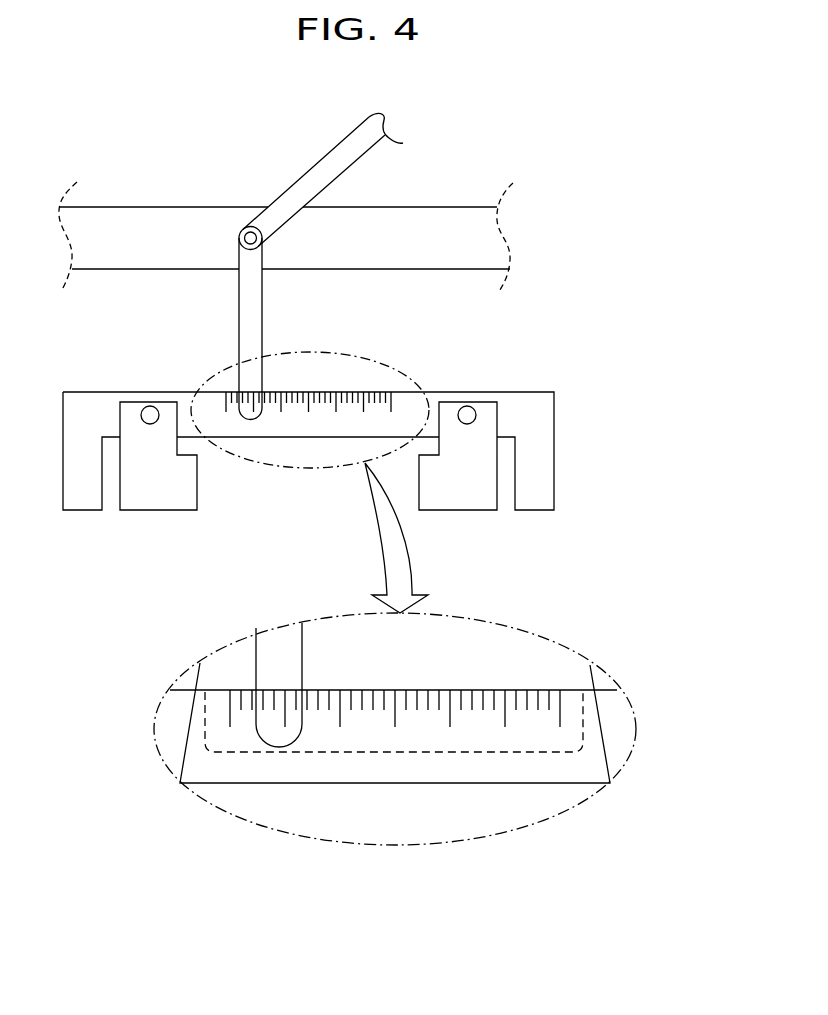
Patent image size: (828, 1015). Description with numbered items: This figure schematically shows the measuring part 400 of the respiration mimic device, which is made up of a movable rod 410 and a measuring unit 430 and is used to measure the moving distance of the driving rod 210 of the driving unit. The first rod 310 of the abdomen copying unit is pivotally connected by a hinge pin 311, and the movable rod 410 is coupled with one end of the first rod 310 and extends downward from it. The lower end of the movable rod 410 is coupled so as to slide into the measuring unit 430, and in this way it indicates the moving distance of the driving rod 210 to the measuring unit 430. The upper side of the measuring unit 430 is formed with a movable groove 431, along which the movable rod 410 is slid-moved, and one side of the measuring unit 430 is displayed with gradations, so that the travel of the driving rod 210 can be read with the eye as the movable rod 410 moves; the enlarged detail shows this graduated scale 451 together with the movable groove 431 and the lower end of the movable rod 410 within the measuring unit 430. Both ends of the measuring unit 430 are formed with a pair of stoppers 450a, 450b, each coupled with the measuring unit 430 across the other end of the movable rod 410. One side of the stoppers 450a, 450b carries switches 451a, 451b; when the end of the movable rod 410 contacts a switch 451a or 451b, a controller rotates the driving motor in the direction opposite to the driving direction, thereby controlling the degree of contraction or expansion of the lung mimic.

The driving rod 210 is at (398, 207).
The first rod 310 is at (315, 165).
The hinge pin 311 is at (250, 237).
The measuring part 400 is at (380, 478).
The movable rod 410 is at (247, 312).
The measuring unit 430 is at (554, 460).
The movable groove 431 is at (492, 752).
The stopper 450a is at (150, 510).
The stopper 450b is at (458, 510).
The scale 451 is at (590, 683).
The switch 451a is at (205, 418).
The switch 451b is at (413, 437).